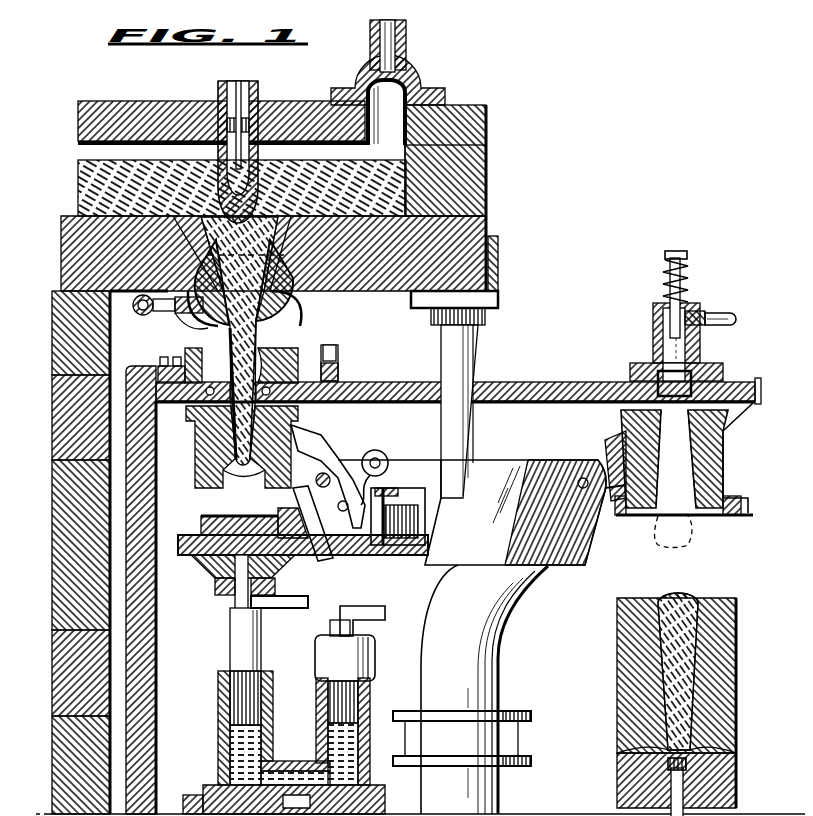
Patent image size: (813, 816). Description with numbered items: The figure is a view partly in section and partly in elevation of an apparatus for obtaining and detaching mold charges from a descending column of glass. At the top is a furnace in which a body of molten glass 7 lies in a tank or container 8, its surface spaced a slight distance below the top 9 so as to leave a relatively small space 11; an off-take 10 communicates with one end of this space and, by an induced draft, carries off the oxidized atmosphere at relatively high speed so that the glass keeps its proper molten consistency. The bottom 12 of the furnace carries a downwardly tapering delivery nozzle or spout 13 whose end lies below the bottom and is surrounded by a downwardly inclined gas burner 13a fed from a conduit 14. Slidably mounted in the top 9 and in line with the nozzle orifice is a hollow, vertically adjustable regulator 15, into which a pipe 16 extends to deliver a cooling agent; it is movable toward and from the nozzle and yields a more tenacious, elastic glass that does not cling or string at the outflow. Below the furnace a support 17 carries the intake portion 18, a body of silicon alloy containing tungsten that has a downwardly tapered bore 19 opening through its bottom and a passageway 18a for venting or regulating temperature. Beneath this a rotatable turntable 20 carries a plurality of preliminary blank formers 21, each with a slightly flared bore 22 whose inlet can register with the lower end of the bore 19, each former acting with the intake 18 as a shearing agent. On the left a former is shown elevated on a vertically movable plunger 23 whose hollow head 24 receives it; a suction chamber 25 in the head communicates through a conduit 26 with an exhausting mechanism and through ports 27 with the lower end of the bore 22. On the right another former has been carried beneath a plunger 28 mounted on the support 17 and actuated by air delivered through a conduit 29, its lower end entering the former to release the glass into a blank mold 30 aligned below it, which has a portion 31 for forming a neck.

The body of molten glass 7 is at (380, 168).
The tank or container 8 is at (464, 164).
The top 9 is at (107, 98).
The off-take 10 is at (399, 45).
The space 11 is at (276, 134).
The bottom 12 is at (456, 230).
The delivery nozzle or spout 13 is at (305, 270).
The gas burner 13a is at (174, 325).
The conduit 14 is at (127, 304).
The adjustable regulator 15 is at (210, 76).
The pipe 16 is at (232, 73).
The support 17 is at (508, 377).
The intake portion 18 is at (180, 340).
The passageway 18a is at (290, 352).
The downwardly tapered bore 19 is at (239, 341).
The rotatable support or turntable 20 is at (499, 637).
The preliminary blank former 21 is at (298, 440).
The bore 22 is at (668, 525).
The plunger 23 is at (227, 625).
The hollow head 24 is at (221, 555).
The suction chamber 25 is at (268, 548).
The conduit 26 is at (298, 598).
The ports 27 is at (198, 532).
The plunger 28 is at (660, 345).
The conduit 29 is at (712, 305).
The blank mold 30 is at (698, 700).
The portion 31 is at (690, 745).